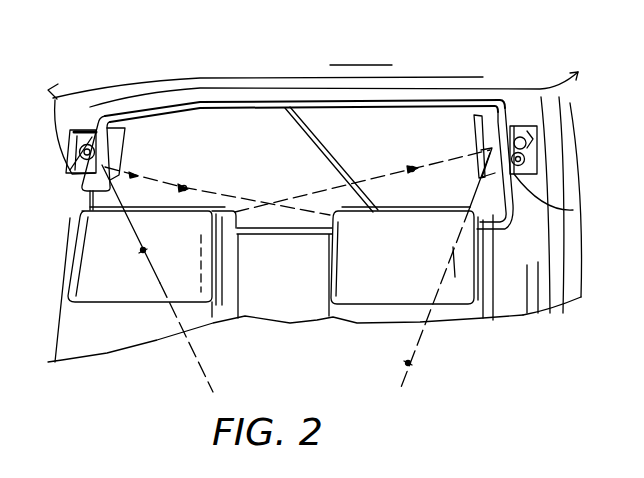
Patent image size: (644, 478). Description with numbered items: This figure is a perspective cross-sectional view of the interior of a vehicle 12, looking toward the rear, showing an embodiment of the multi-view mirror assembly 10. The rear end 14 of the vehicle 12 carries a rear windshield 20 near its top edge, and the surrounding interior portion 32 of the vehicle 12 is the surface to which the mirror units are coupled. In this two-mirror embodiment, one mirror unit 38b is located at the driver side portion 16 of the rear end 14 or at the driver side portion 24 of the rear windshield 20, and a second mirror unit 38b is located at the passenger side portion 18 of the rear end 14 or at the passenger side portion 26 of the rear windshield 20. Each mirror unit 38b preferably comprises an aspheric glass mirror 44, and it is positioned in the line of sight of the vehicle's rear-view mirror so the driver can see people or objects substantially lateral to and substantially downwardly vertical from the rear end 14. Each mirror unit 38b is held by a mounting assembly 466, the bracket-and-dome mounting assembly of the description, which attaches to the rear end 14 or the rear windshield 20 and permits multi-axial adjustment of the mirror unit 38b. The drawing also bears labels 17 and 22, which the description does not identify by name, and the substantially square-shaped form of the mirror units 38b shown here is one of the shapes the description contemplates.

The multi-view mirror assembly 10 is at (60, 259).
The vehicle 12 is at (356, 70).
The rear end 14 is at (292, 286).
The driver side portion 16 is at (568, 176).
The cargo area cover 17 is at (289, 72).
The passenger side portion 18 is at (100, 120).
The rear windshield 20 is at (292, 180).
The support strut 22 is at (313, 128).
The driver side portion of the rear windshield 24 is at (440, 110).
The passenger side portion of the rear windshield 26 is at (200, 78).
The interior portion 32 is at (102, 322).
The mirror unit 38b is at (91, 115).
The aspheric glass mirror 44 is at (161, 120).
The mounting assembly 466 is at (81, 106).